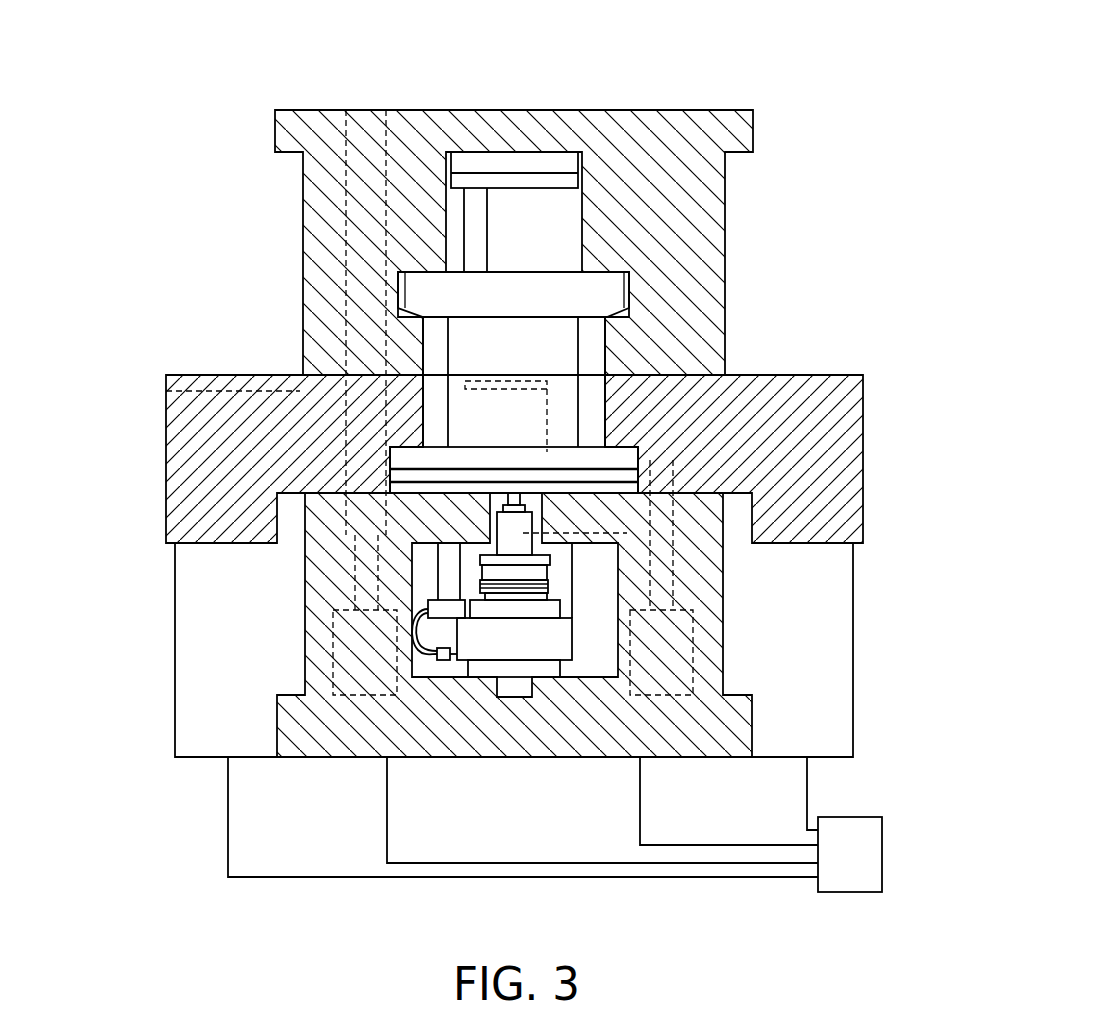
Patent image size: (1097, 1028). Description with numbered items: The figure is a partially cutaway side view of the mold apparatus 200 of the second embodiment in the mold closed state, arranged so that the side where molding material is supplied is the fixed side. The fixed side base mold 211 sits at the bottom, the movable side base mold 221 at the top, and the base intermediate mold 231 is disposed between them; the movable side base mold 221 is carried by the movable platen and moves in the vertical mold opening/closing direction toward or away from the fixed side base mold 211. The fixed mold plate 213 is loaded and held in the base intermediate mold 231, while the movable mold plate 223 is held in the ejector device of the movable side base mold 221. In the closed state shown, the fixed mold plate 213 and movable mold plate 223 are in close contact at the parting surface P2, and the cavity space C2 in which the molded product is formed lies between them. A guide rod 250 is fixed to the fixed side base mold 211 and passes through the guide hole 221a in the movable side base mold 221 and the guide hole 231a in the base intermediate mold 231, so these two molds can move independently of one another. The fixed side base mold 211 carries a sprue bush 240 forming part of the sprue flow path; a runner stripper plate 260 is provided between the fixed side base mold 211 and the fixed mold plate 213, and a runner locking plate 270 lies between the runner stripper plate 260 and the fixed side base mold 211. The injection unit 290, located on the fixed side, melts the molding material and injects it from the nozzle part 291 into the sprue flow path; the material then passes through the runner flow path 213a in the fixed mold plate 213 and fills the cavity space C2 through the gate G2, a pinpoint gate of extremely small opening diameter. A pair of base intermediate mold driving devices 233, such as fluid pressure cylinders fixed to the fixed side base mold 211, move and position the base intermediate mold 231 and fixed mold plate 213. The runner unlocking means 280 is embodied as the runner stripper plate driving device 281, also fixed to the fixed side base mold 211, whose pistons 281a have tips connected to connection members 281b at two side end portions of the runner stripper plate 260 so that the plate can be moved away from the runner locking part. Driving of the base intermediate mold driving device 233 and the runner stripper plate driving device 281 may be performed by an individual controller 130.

The mold apparatus 200 is at (538, 57).
The movable side base mold 221 is at (303, 180).
The guide hole 221a is at (386, 223).
The movable mold plate 223 is at (462, 352).
The guide rod 250 is at (350, 330).
The fixed mold plate 213 is at (455, 410).
The runner flow path 213a is at (640, 418).
The cavity space C2 is at (527, 367).
The gate G2 is at (557, 437).
The parting surface P2 is at (863, 376).
The base intermediate mold 231 is at (166, 413).
The guide hole 231a is at (166, 391).
The sprue bush 240 is at (523, 497).
The connection member 281b is at (392, 449).
The nozzle part 291 is at (535, 508).
The runner stripper plate 260 is at (390, 470).
The runner locking plate 270 is at (390, 489).
The fixed side base mold 211 is at (505, 757).
The base intermediate mold driving device 233 is at (185, 651).
The injection unit 290 is at (547, 583).
The piston 281a is at (420, 575).
The runner stripper plate driving device 281 is at (361, 697).
The runner unlocking means 280 is at (322, 797).
The controller 130 is at (882, 858).